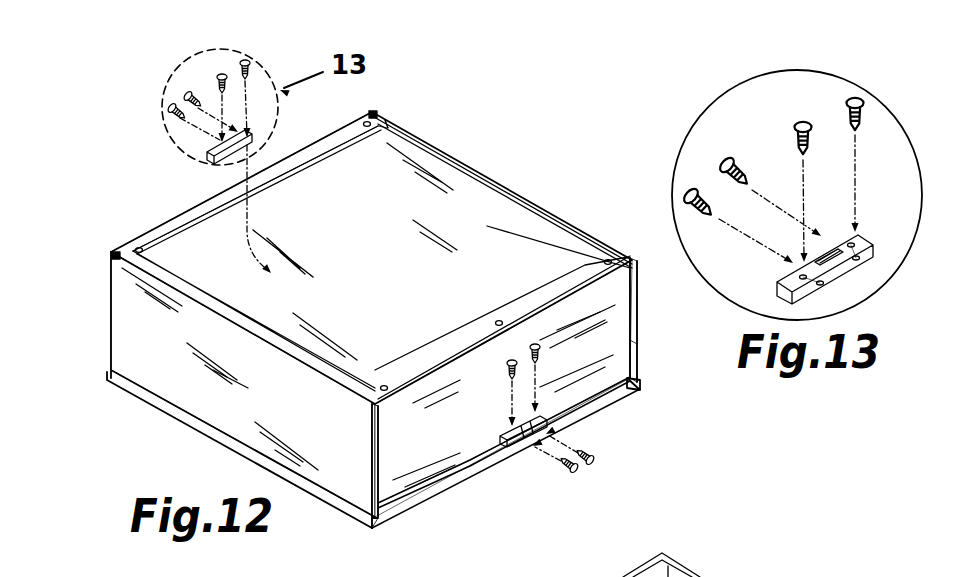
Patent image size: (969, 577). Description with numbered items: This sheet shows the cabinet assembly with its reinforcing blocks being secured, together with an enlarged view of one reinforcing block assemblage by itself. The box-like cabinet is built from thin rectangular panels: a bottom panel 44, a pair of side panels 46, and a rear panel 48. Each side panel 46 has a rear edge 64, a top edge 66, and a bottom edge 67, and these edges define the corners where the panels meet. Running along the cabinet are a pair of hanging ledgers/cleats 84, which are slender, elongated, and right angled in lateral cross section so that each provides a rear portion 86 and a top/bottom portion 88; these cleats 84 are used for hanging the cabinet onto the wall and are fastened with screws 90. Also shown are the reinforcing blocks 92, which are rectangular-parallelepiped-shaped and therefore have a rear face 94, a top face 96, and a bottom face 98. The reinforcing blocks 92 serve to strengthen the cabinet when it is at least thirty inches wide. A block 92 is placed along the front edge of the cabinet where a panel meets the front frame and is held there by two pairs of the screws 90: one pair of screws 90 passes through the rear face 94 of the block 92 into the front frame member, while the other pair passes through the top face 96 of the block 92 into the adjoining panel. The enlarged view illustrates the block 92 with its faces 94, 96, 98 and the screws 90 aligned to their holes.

In FIG. 12, the bottom panel 44 is at (452, 420).
In FIG. 12, the side panels 46 is at (188, 375).
In FIG. 12, the rear panel 48 is at (487, 222).
In FIG. 12, the rear edges 64 is at (545, 213).
In FIG. 12, the top edges 66 is at (111, 317).
In FIG. 12, the bottom edges 67 is at (638, 333).
In FIG. 12, the hanging ledgers/cleats 84 is at (185, 222).
In FIG. 12, the rear portions 86 is at (338, 137).
In FIG. 12, the top/bottom portions 88 is at (633, 350).
In FIG. 12, the screws 90 is at (196, 95).
In FIG. 13, the screws 90 is at (798, 138).
In FIG. 12, the reinforcing blocks 92 is at (210, 156).
In FIG. 13, the reinforcing blocks 92 is at (777, 292).
In FIG. 13, the rear faces 94 is at (822, 245).
In FIG. 13, the top faces 96 is at (817, 255).
In FIG. 13, the bottom faces 98 is at (838, 273).